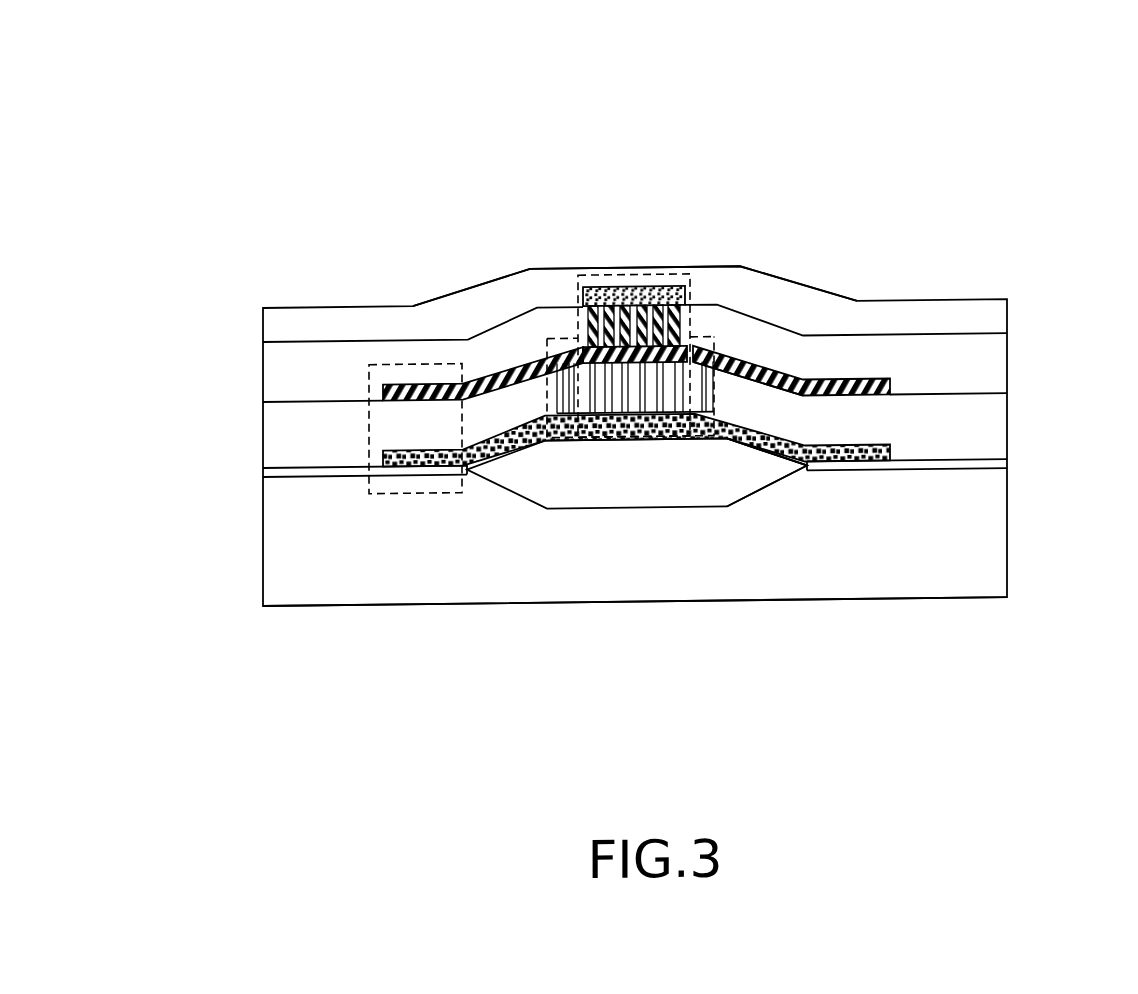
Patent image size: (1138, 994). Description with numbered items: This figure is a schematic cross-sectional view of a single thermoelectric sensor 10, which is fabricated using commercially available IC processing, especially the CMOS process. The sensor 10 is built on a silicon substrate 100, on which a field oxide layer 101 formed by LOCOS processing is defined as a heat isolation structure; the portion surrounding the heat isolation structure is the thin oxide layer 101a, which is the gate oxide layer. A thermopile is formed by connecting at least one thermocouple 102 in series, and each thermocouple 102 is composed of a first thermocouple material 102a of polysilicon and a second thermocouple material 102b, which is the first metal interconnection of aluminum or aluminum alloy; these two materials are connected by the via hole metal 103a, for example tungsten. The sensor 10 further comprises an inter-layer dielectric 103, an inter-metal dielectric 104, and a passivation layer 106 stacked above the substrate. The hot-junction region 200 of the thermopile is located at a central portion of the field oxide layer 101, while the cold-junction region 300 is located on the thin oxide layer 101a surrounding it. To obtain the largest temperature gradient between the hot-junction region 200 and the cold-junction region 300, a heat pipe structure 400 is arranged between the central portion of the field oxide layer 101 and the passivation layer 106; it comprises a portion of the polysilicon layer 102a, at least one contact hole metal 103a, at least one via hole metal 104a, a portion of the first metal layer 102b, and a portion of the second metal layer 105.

The thermoelectric sensor 10 is at (977, 237).
The silicon substrate 100 is at (610, 579).
The field oxide layer 101 is at (610, 494).
The thin oxide layer 101a is at (993, 474).
The thermocouple 102 is at (900, 660).
The first thermocouple material 102a is at (780, 454).
The second thermocouple material 102b is at (783, 394).
The inter-layer dielectric 103 is at (993, 436).
The via hole metal 103a is at (708, 392).
The inter-metal dielectric 104 is at (993, 379).
The via hole metal 104a is at (693, 338).
The second metal layer 105 is at (690, 285).
The passivation layer 106 is at (993, 322).
The hot-junction region 200 is at (543, 345).
The cold-junction region 300 is at (368, 436).
The heat pipe structure 400 is at (592, 279).